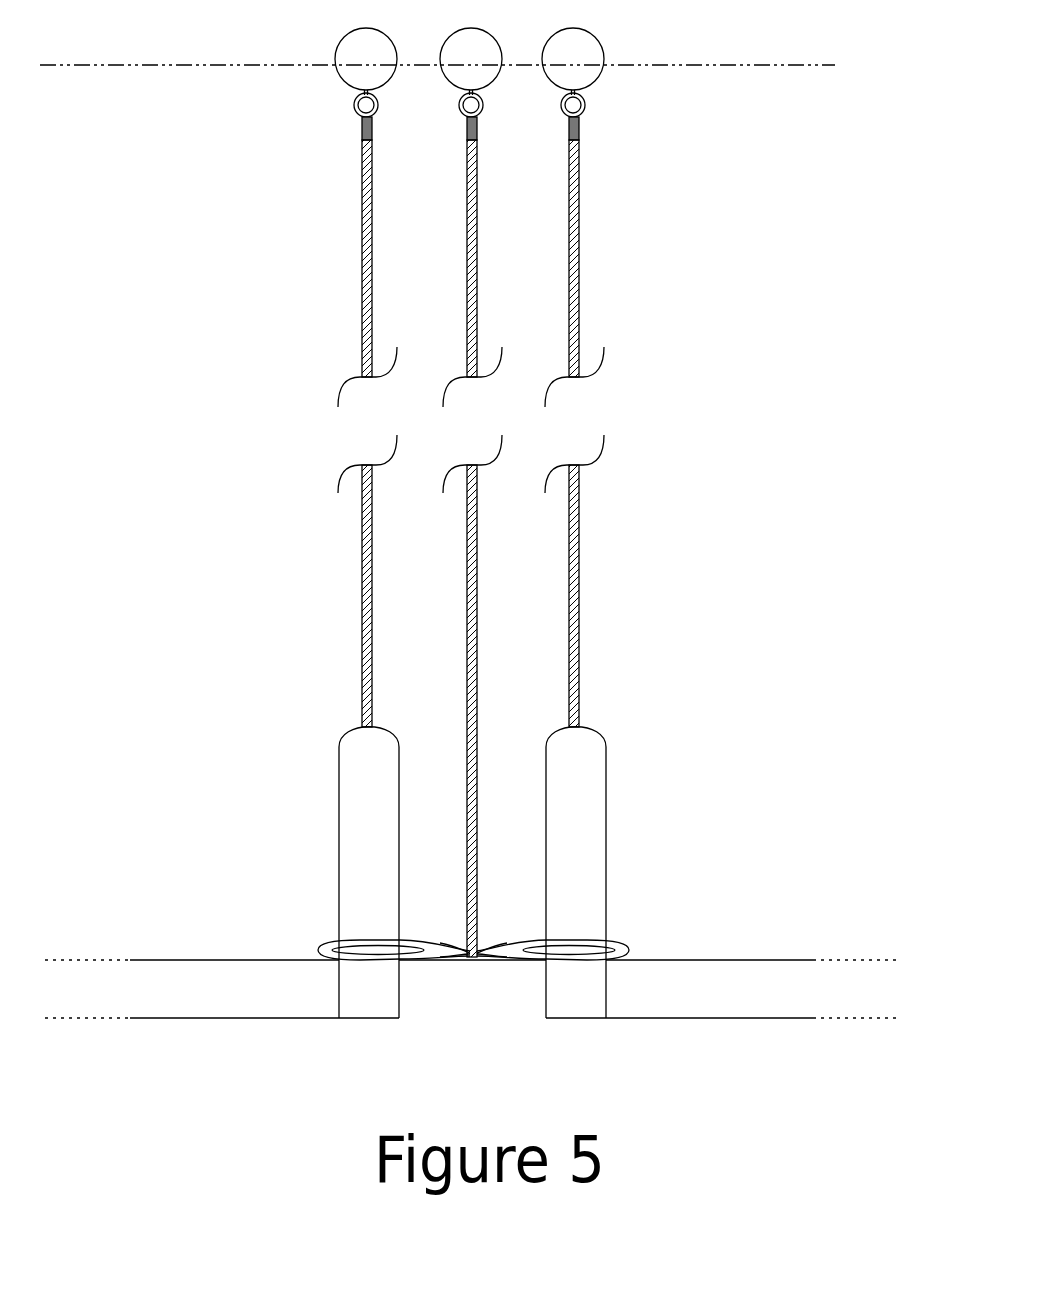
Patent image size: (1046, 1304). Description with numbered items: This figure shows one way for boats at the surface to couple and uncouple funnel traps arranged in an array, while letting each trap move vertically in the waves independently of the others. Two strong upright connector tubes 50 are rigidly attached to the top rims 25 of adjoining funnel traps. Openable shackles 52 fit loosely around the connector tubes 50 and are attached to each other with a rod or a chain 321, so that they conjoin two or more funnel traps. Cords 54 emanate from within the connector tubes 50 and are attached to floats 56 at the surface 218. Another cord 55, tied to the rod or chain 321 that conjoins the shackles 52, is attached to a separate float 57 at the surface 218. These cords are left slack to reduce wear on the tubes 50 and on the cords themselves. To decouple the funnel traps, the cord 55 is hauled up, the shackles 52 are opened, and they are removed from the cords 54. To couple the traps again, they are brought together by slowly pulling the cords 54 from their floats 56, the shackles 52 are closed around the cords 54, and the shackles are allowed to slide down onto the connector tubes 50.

The surface 218 is at (253, 66).
The float 56 is at (340, 78).
The float 57 is at (443, 75).
The cord 54 is at (362, 260).
The cord 55 is at (467, 248).
The connector tube 50 is at (339, 828).
The openable shackle 52 is at (328, 945).
The top rim 25 is at (244, 960).
The rod or chain 321 is at (463, 955).